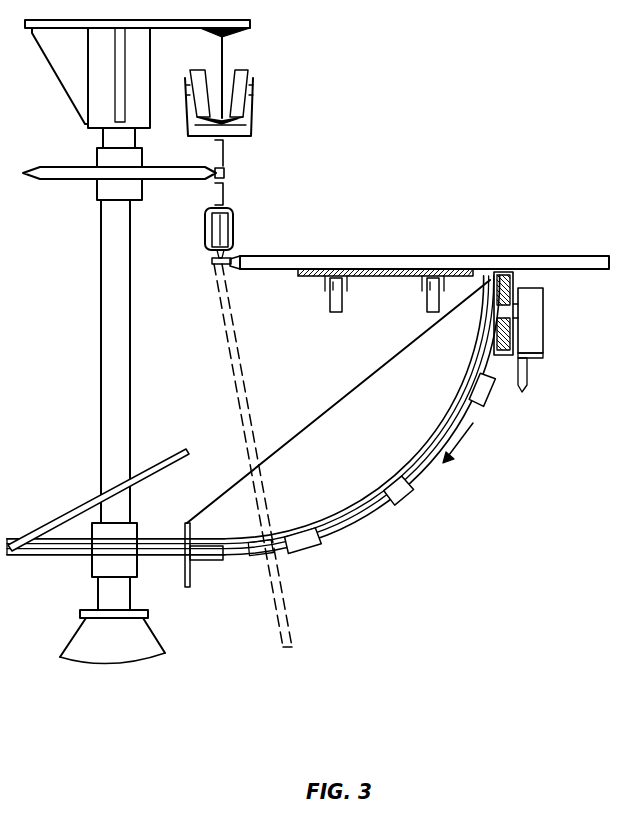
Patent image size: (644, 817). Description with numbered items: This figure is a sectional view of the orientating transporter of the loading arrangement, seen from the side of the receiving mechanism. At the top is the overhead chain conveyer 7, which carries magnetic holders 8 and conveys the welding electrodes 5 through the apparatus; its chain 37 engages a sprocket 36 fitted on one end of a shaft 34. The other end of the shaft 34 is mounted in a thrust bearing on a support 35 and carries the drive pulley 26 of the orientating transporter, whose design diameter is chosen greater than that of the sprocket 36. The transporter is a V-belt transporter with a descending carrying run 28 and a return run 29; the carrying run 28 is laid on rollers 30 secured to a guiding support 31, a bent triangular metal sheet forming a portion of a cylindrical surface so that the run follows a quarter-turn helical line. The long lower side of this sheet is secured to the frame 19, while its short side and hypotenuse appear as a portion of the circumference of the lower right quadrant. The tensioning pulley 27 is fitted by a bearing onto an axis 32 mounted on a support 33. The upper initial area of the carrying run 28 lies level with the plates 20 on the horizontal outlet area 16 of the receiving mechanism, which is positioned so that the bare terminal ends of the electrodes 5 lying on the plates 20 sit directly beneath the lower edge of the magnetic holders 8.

The electrodes 5 is at (301, 261).
The overhead chain conveyer 7 is at (255, 97).
The magnetic holders 8 is at (235, 228).
The horizontal outlet area 16 is at (432, 268).
The frame 19 is at (192, 578).
The plates 20 is at (470, 268).
The drive pulley 26 is at (148, 548).
The tensioning pulley 27 is at (520, 284).
The carrying run 28 is at (470, 405).
The return run 29 is at (40, 540).
The rollers 30 is at (397, 502).
The guiding support 31 is at (413, 463).
The axis 32 is at (500, 313).
The support 33 is at (545, 357).
The shaft 34 is at (105, 372).
The support 35 is at (133, 658).
The sprocket 36 is at (48, 171).
The chain 37 is at (225, 173).